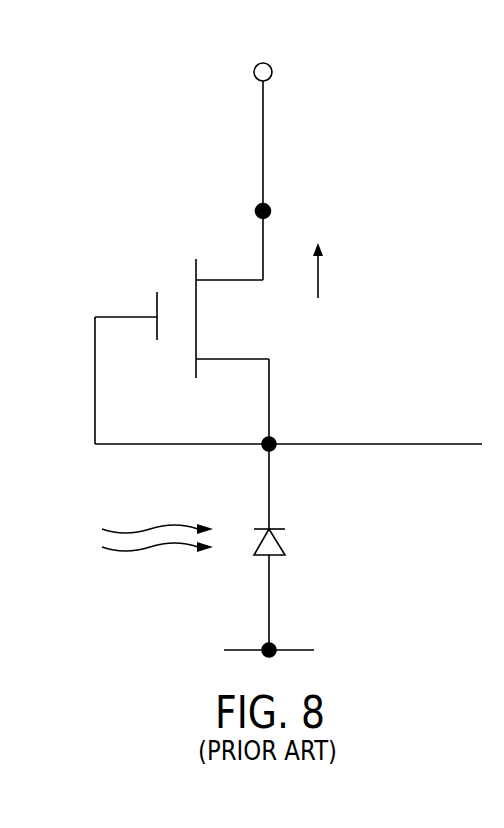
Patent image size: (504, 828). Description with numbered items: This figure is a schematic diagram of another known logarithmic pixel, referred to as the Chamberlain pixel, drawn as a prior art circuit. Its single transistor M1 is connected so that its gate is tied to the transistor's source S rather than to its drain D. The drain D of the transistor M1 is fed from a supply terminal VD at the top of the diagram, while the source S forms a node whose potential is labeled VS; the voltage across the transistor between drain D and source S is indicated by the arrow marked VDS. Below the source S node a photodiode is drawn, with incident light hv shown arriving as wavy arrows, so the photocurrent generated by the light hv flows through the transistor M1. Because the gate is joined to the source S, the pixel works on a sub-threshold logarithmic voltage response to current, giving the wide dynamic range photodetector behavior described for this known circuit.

The MOSFET transistor M1 is at (173, 351).
The drain node D is at (272, 240).
The source node S is at (288, 458).
The drain supply voltage terminal VD is at (266, 115).
The source voltage VS is at (287, 469).
The drain-source voltage VDS is at (342, 270).
The incident light (photon energy) on photodiode hv is at (203, 575).